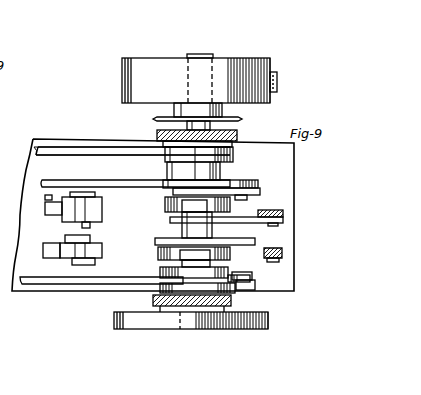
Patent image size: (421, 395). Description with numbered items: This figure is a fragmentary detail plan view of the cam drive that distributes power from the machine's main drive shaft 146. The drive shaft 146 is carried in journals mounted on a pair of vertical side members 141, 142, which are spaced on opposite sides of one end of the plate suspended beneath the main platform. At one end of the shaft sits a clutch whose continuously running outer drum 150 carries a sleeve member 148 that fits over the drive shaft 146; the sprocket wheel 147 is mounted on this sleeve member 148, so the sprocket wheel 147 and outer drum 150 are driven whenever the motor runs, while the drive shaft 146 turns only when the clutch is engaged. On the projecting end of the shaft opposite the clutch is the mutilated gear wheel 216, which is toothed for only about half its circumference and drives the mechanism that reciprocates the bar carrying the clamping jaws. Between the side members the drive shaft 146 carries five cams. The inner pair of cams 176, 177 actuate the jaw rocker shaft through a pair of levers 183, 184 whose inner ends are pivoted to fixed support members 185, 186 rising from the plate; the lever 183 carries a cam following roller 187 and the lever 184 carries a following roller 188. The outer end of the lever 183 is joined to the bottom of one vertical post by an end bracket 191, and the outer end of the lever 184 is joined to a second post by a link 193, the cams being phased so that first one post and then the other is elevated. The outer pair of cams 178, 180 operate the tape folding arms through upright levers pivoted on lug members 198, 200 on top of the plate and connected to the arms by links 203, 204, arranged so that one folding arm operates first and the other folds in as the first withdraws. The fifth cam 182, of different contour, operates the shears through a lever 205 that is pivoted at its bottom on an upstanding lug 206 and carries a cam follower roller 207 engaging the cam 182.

The vertical side member 141 is at (232, 301).
The vertical side member 142 is at (237, 136).
The main drive shaft 146 is at (213, 57).
The sprocket wheel 147 is at (155, 118).
The sleeve member 148 is at (173, 106).
The outer drum 150 is at (251, 60).
The cam 176 is at (158, 253).
The cam 177 is at (165, 205).
The cam 178 is at (234, 157).
The cam 180 is at (160, 273).
The fifth cam 182 is at (167, 180).
The lever 183 is at (262, 242).
The lever 184 is at (226, 228).
The fixed support member 185 is at (20, 250).
The fixed support member 186 is at (18, 212).
The cam following roller 187 is at (228, 256).
The following roller 188 is at (182, 215).
The end bracket 191 is at (283, 253).
The link 193 is at (284, 214).
The lug member 198 is at (120, 178).
The lug member 200 is at (258, 284).
The link 203 is at (70, 278).
The link 204 is at (74, 154).
The lever 205 is at (260, 193).
The lug 206 is at (30, 198).
The cam follower roller 207 is at (258, 184).
The mutilated gear wheel 216 is at (236, 330).